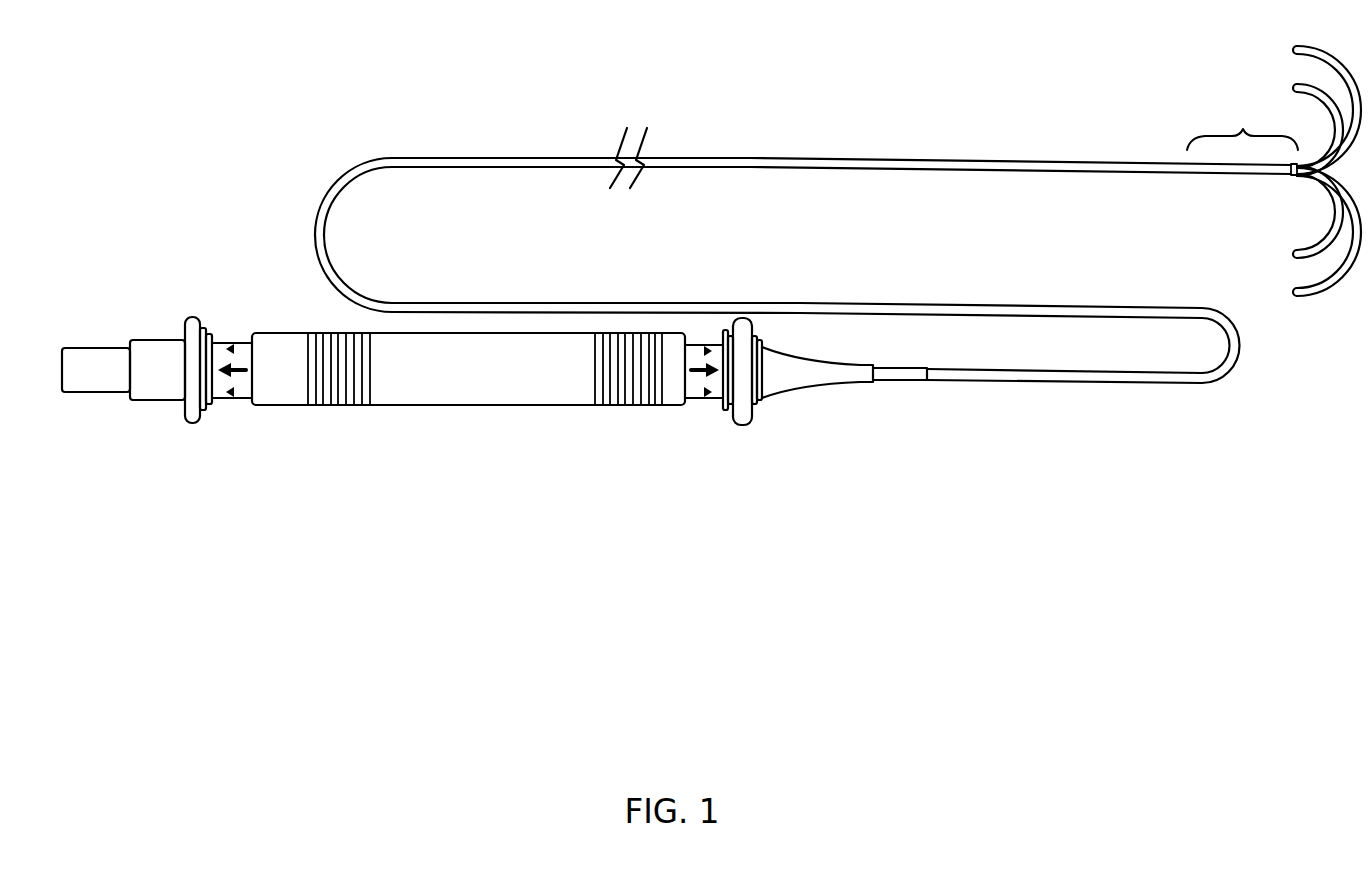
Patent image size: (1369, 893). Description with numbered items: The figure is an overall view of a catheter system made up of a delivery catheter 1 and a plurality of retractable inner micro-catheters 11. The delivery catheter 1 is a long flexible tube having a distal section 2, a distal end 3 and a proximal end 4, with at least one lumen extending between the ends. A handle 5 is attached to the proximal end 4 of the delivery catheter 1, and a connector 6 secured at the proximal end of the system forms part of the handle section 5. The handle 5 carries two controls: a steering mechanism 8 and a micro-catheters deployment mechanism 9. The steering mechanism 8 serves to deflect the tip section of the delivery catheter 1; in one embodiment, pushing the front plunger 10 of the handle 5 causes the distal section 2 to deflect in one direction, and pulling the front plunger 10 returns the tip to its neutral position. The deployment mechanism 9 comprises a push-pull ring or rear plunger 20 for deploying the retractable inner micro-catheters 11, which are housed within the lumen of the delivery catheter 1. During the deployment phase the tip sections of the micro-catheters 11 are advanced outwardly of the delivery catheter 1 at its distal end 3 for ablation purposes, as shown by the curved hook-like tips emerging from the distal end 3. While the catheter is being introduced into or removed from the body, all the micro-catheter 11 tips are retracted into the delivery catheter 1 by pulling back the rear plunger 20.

The delivery catheter 1 is at (735, 152).
The distal section 2 is at (1242, 117).
The distal end 3 is at (1293, 182).
The proximal end 4 is at (921, 392).
The handle 5 is at (463, 410).
The connector 6 is at (84, 340).
The steering mechanism 8 is at (700, 405).
The micro-catheters deployment mechanism 9 is at (233, 402).
The front plunger 10 is at (737, 428).
The retractable inner micro-catheters 11 is at (1335, 287).
The rear plunger 20 is at (182, 428).